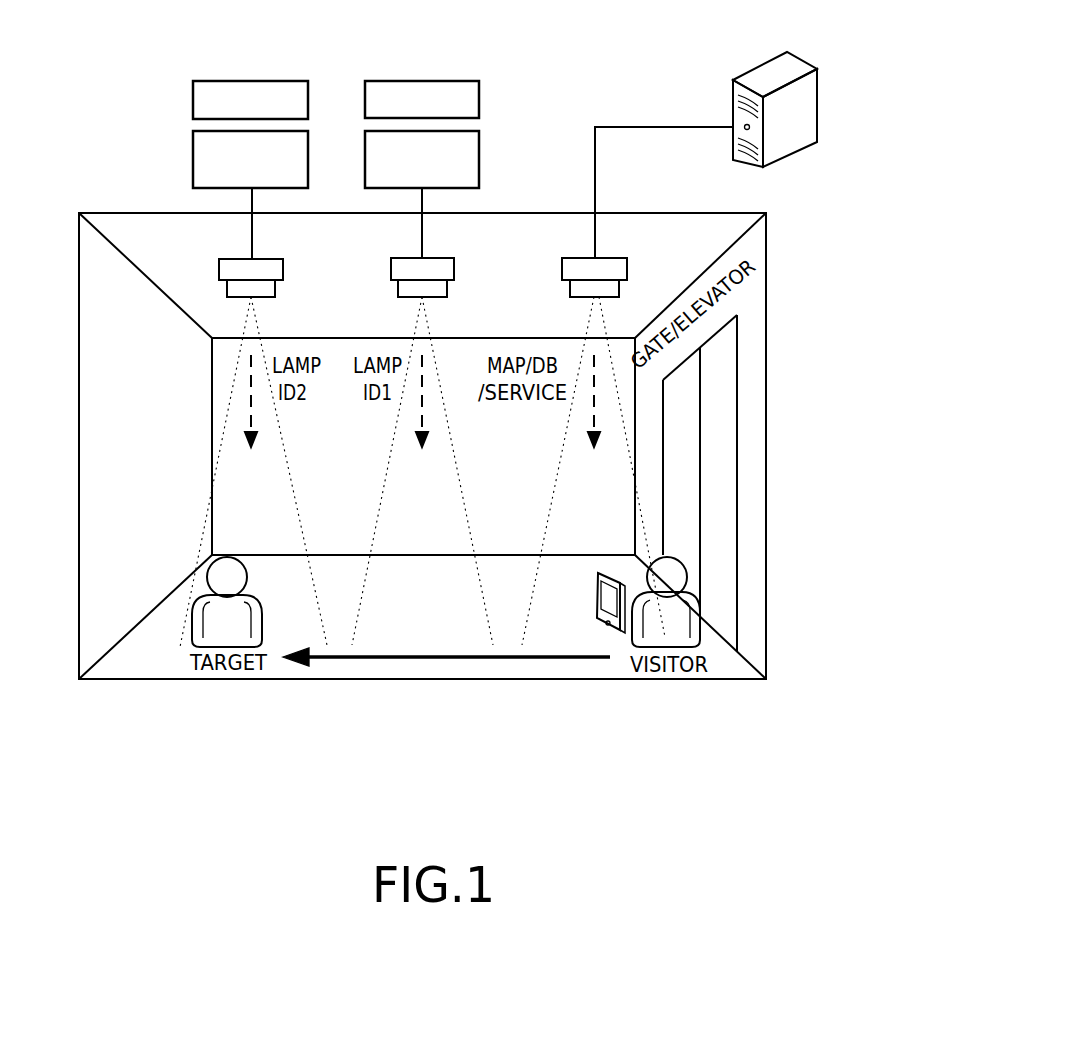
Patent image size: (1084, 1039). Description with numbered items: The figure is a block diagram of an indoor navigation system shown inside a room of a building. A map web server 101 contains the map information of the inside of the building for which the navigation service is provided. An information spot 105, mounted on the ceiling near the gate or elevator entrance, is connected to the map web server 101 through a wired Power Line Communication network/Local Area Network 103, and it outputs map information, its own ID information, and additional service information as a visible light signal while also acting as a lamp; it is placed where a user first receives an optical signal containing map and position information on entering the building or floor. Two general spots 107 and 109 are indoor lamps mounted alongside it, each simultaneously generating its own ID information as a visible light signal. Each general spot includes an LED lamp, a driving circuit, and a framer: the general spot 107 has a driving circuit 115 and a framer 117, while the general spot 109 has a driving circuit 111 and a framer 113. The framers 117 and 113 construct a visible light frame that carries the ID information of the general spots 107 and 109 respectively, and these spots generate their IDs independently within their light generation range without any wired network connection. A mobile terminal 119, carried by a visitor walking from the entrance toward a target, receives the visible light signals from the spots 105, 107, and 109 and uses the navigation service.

The map web server 101 is at (740, 78).
The Power Line Communication network/Local Area Network 103 is at (641, 90).
The information spot 105 is at (627, 286).
The general spot 107 is at (454, 287).
The general spot 109 is at (283, 288).
The driving circuit 111 is at (192, 157).
The framer 113 is at (192, 101).
The driving circuit 115 is at (480, 154).
The framer 117 is at (480, 97).
The mobile terminal 119 is at (595, 599).